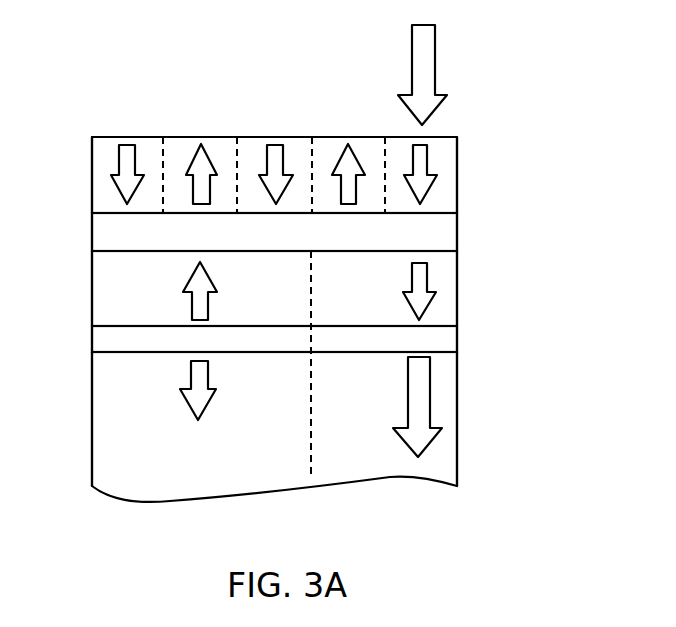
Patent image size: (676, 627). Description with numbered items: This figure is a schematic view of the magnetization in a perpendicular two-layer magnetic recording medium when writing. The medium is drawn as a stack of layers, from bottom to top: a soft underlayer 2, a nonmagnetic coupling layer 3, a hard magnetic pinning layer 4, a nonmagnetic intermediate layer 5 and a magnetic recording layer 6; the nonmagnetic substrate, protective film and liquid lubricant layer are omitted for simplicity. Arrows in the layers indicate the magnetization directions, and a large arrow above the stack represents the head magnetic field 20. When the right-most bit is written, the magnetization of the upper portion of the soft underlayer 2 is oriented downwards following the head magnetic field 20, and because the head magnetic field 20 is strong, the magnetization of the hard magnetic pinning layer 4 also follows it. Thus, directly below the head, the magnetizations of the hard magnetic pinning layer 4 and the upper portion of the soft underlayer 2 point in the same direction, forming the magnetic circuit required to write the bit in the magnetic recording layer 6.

The soft underlayer 2 is at (448, 383).
The nonmagnetic coupling layer 3 is at (448, 338).
The hard magnetic pinning layer 4 is at (448, 290).
The nonmagnetic intermediate layer 5 is at (448, 238).
The magnetic recording layer 6 is at (448, 180).
The head magnetic field 20 is at (427, 68).